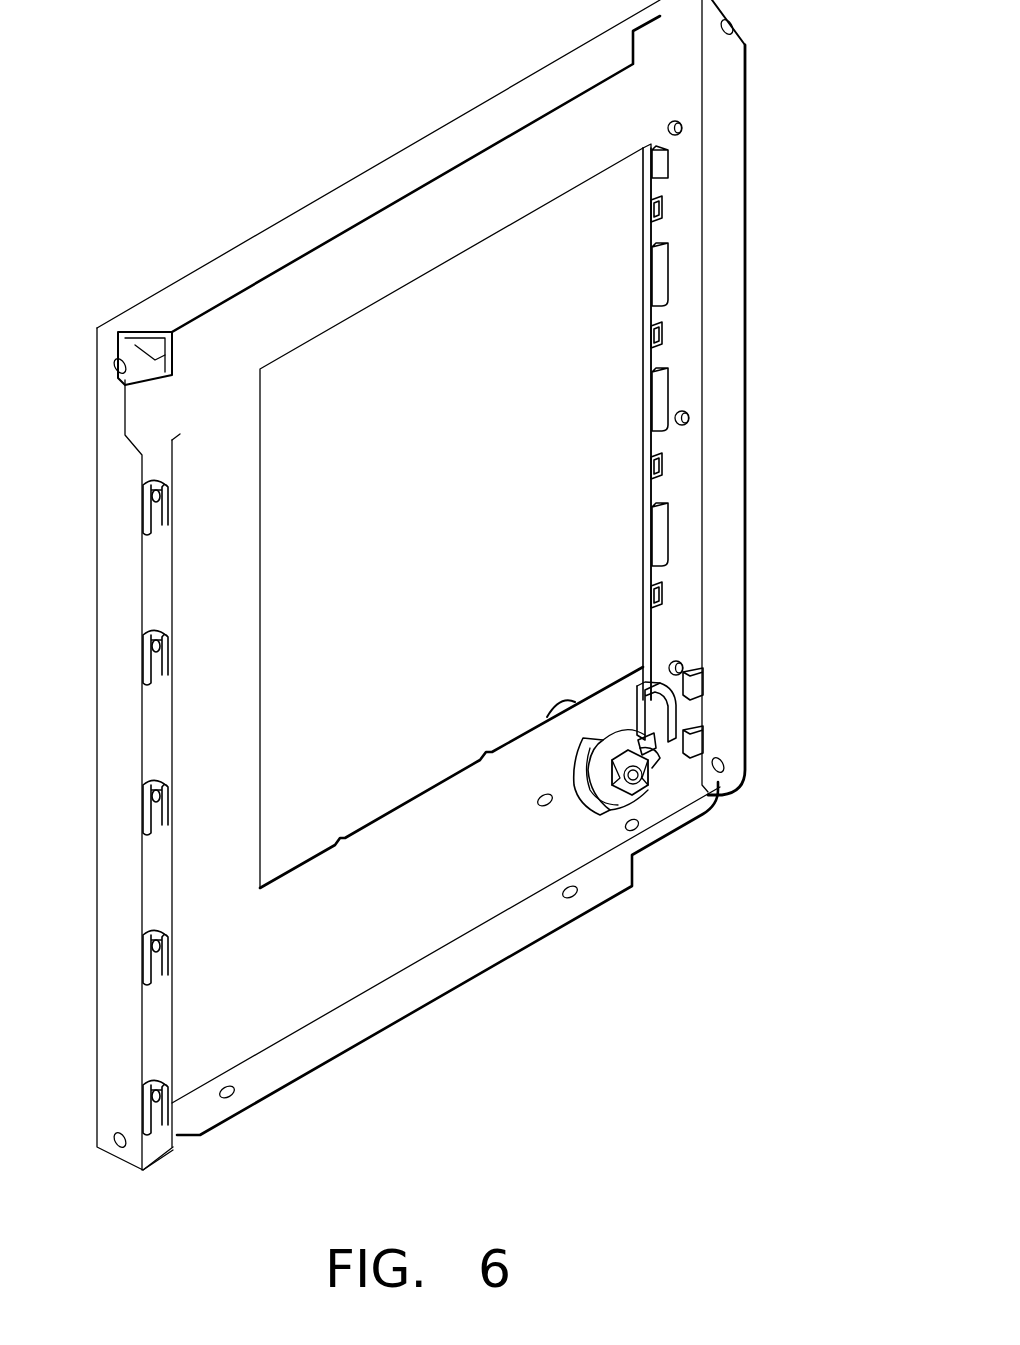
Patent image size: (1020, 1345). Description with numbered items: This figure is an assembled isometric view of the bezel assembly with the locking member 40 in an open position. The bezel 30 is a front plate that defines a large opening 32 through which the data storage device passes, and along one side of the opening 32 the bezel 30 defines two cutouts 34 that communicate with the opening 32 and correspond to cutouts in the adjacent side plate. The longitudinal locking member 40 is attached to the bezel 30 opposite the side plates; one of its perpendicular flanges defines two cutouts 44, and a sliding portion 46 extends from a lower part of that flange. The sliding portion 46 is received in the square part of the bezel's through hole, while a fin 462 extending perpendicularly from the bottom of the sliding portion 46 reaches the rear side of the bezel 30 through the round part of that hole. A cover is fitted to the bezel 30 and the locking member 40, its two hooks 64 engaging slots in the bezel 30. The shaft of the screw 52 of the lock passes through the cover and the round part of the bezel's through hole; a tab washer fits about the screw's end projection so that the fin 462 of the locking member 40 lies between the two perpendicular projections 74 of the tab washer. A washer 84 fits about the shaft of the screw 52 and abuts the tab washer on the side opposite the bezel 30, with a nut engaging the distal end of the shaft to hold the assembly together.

The bezel 30 is at (415, 172).
The opening 32 is at (415, 362).
The cutouts 34 is at (655, 344).
The locking member 40 is at (660, 212).
The cutouts 44 is at (650, 318).
The sliding portion 46 is at (655, 718).
The fin 462 is at (650, 750).
The screw 52 is at (648, 762).
The hooks 64 is at (700, 678).
The projections 74 is at (648, 760).
The washer 84 is at (612, 795).